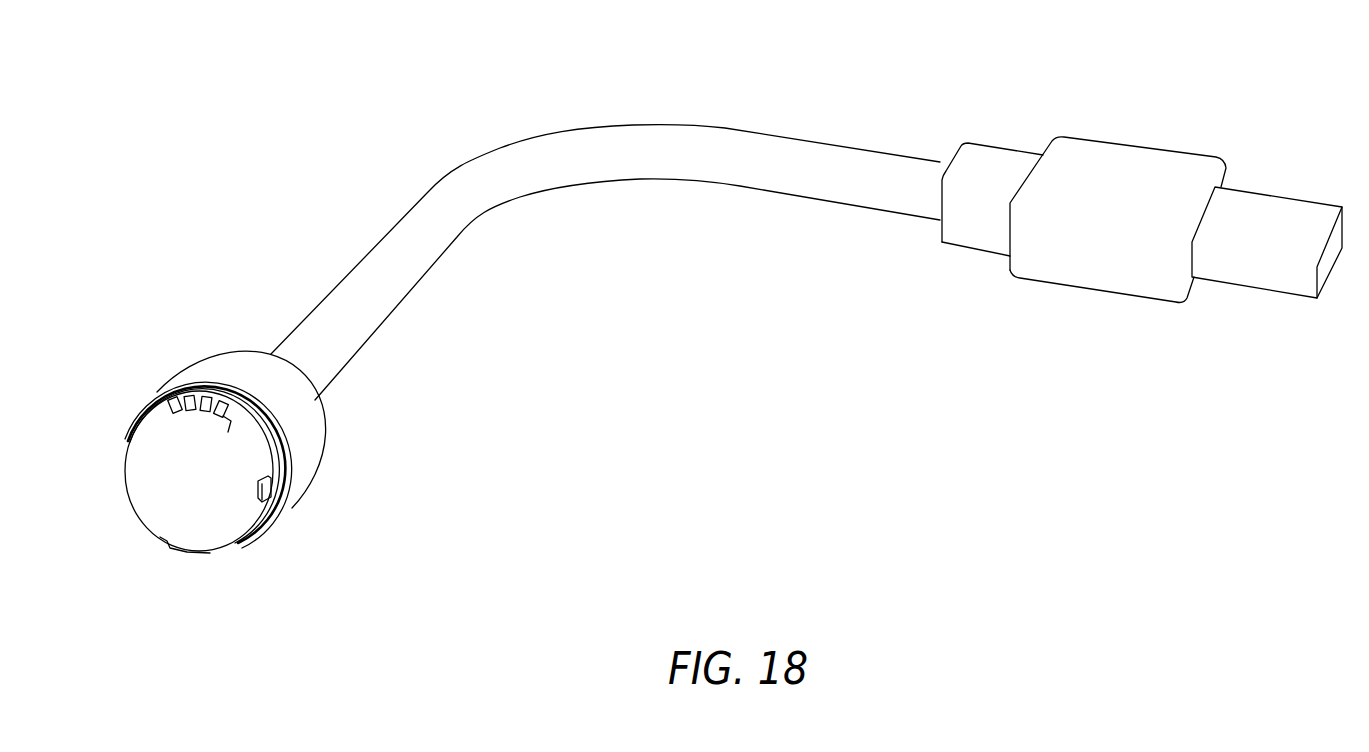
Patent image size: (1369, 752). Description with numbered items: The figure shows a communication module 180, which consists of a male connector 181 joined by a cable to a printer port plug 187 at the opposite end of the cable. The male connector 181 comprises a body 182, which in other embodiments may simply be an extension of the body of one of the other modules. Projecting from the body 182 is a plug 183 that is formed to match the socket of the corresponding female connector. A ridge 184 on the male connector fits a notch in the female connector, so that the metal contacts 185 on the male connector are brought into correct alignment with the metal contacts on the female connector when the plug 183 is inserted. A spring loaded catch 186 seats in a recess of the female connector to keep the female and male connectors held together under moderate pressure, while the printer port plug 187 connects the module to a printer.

The communication module 180 is at (633, 125).
The male connector 181 is at (300, 492).
The body 182 is at (249, 352).
The plug 183 is at (142, 480).
The ridge 184 is at (187, 552).
The metal contacts 185 is at (165, 398).
The spring loaded catch 186 is at (285, 517).
The printer port plug 187 is at (1123, 143).